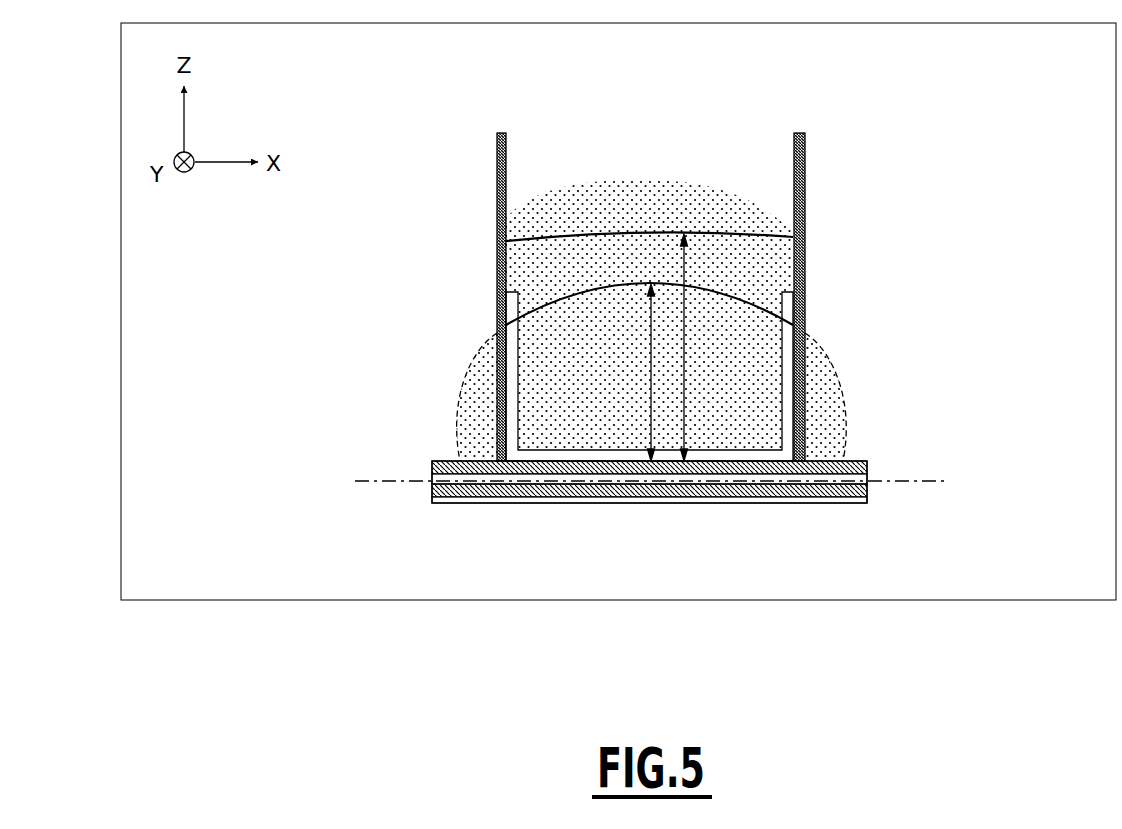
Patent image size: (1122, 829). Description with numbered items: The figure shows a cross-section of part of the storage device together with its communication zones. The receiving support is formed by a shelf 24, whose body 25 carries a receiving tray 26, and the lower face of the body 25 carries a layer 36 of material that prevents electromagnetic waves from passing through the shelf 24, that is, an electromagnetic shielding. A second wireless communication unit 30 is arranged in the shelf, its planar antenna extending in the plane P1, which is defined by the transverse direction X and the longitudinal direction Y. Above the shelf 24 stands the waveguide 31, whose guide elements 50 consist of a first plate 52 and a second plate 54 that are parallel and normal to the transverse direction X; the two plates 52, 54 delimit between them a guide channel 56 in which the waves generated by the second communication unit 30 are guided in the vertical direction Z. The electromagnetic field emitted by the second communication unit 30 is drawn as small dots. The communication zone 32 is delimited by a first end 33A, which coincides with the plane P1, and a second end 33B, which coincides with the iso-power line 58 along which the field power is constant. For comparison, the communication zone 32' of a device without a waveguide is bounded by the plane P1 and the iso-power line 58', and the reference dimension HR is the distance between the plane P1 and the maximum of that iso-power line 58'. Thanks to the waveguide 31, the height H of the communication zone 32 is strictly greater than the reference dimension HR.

The shelf 24 is at (430, 450).
The body 25 is at (482, 497).
The receiving tray 26 is at (490, 407).
The second wireless communication unit 30 is at (781, 497).
The waveguide 31 is at (816, 397).
The communication zone 32 is at (614, 320).
The communication zone 32' is at (701, 392).
The first end 33A is at (654, 499).
The second end 33B is at (757, 223).
The layer 36 is at (587, 497).
The guide elements 50 is at (816, 262).
The first plate 52 is at (806, 300).
The second plate 54 is at (497, 367).
The guide channel 56 is at (735, 415).
The iso-power line 58 is at (649, 189).
The iso-power line 58' is at (599, 305).
The height of the communication zone H is at (686, 358).
The reference dimension HR is at (651, 383).
The plane P1 is at (665, 482).